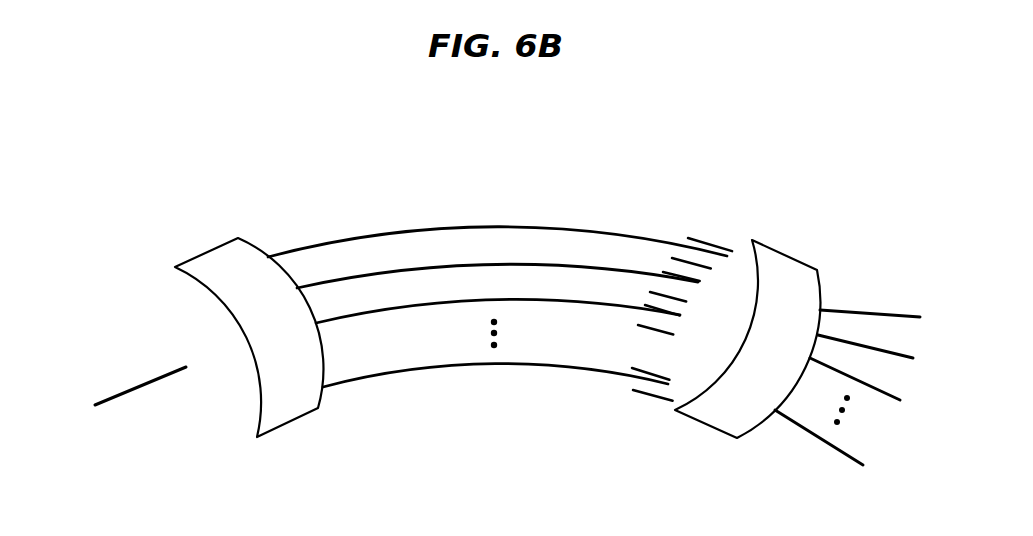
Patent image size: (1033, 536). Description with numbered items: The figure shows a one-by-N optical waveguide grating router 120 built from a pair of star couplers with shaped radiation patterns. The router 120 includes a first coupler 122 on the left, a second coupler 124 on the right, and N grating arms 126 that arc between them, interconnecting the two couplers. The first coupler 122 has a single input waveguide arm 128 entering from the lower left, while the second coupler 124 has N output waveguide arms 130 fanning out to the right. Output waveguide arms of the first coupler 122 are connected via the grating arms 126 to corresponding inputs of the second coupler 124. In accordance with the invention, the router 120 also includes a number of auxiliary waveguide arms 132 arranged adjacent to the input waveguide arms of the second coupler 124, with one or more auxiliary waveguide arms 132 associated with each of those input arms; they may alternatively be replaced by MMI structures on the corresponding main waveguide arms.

The optical WGR 120 is at (286, 157).
The first coupler 122 is at (205, 252).
The second coupler 124 is at (780, 252).
The grating arms 126 is at (475, 227).
The input waveguide arm 128 is at (133, 390).
The output waveguide arms 130 is at (867, 308).
The auxiliary waveguide arms 132 is at (708, 240).